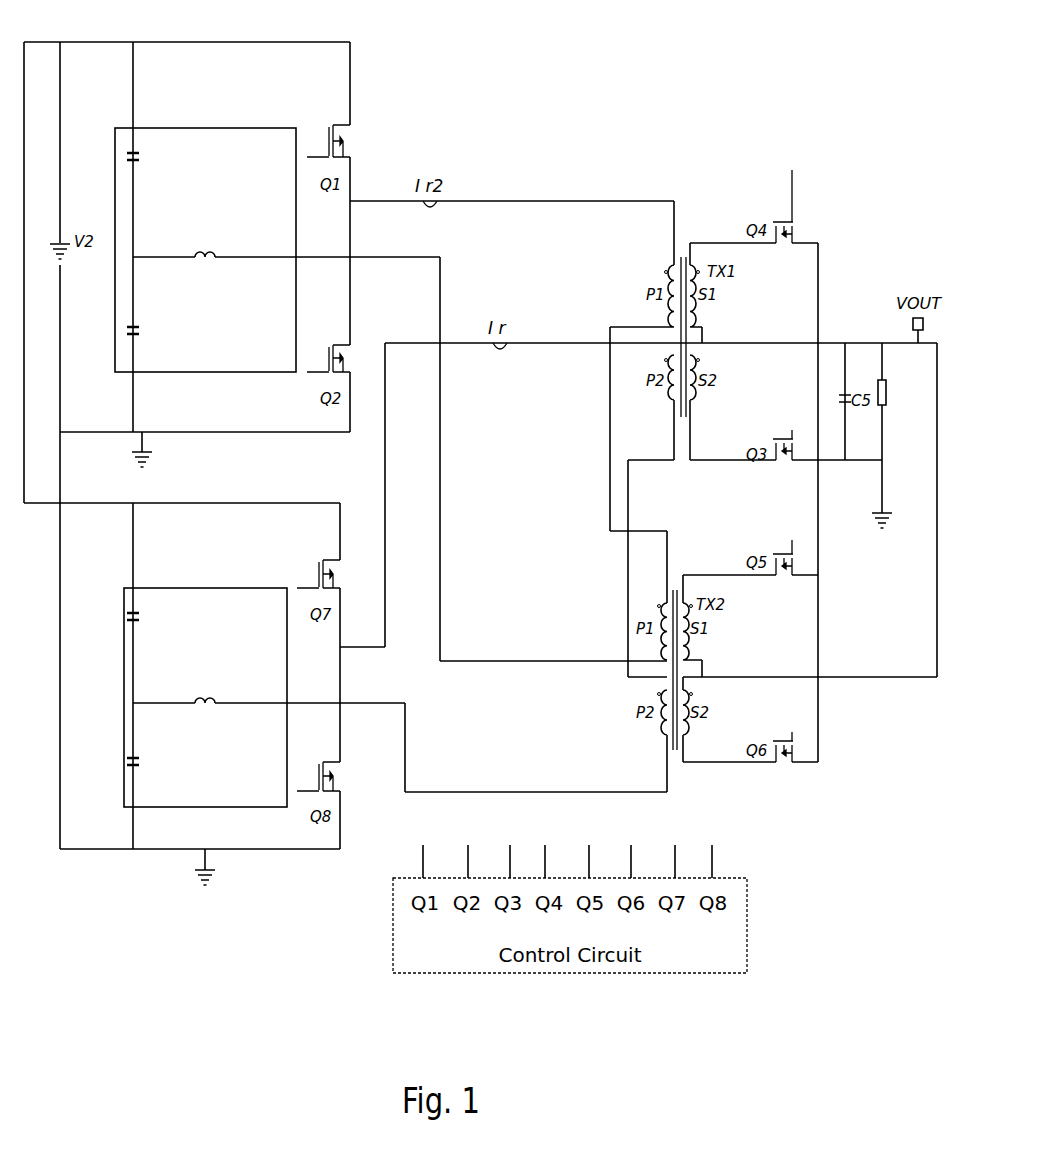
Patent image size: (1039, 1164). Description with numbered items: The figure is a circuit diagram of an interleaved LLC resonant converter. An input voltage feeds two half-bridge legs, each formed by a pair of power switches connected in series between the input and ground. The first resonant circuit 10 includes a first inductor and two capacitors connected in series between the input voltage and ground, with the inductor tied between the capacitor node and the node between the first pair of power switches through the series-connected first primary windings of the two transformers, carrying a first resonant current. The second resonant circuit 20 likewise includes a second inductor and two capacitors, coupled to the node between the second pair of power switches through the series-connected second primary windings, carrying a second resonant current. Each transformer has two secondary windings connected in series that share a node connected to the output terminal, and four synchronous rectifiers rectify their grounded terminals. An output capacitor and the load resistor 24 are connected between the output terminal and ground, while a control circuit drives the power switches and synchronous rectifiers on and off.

The first resonant circuit 10 is at (177, 128).
The second resonant circuit 20 is at (190, 588).
The resistor Ro24 24 is at (899, 435).